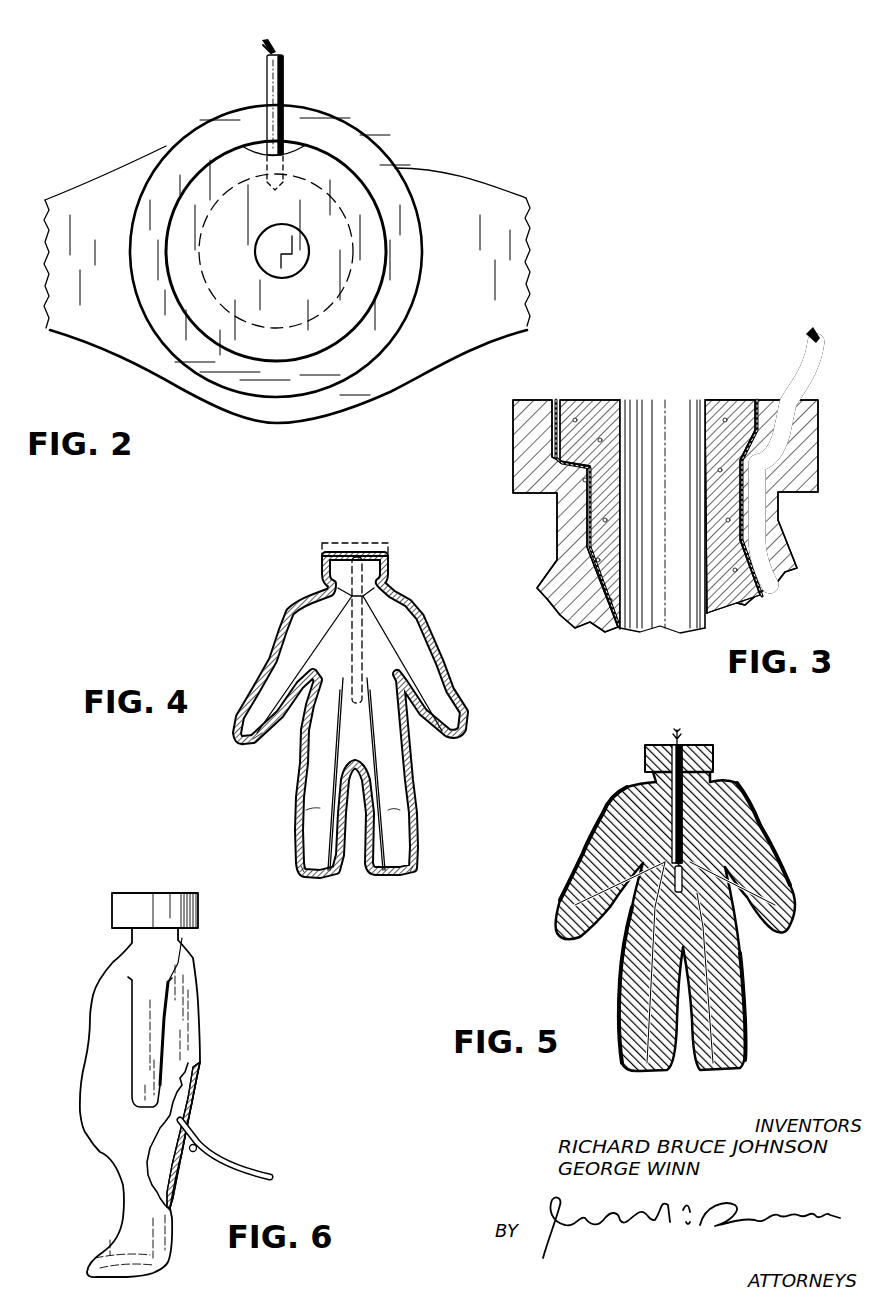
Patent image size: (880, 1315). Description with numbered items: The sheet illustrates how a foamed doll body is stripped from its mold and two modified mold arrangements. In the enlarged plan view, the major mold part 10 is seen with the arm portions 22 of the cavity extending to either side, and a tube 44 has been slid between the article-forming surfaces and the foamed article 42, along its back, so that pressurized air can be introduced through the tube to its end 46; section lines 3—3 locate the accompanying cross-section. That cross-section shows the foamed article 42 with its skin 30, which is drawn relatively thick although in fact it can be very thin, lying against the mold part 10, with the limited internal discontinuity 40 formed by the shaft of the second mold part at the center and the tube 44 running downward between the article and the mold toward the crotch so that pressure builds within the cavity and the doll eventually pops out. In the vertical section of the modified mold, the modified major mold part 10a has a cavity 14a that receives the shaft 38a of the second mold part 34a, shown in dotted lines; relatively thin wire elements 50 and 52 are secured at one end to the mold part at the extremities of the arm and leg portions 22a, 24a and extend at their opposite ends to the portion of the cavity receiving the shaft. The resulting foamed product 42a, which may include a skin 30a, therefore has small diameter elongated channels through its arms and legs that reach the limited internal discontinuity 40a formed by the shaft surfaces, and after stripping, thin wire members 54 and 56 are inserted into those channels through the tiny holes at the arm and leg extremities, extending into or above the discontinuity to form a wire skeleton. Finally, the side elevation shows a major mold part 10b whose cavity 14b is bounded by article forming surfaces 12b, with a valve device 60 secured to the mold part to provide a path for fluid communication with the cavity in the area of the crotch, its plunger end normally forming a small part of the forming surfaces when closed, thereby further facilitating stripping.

In FIG. 2, the section lines 3— 3 is at (277, 48).
In FIG. 2, the major mold part 10 is at (430, 196).
In FIG. 3, the major mold part 10 is at (778, 530).
In FIG. 2, the arm portions 22 is at (100, 200).
In FIG. 3, the skin 30 is at (588, 400).
In FIG. 2, the limited internal discontinuity 40 is at (284, 238).
In FIG. 3, the limited internal discontinuity 40 is at (627, 498).
In FIG. 3, the foamed article 42 is at (598, 400).
In FIG. 2, the tube 44 is at (288, 78).
In FIG. 3, the tube 44 is at (787, 366).
In FIG. 2, the tube tip / nozzle 46 is at (265, 42).
In FIG. 3, the tube tip / nozzle 46 is at (808, 335).
In FIG. 4, the modified major mold part 10a is at (424, 613).
In FIG. 4, the cavity 14a is at (393, 659).
In FIG. 4, the internal web lines 22a is at (284, 634).
In FIG. 4, the leg portion 24a is at (297, 843).
In FIG. 4, the second mold part 34a is at (407, 530).
In FIG. 4, the shaft 38a is at (363, 622).
In FIG. 4, the wire elements 50 is at (275, 700).
In FIG. 4, the wire elements 52 is at (320, 808).
In FIG. 5, the skin 30a is at (791, 888).
In FIG. 5, the limited internal discontinuity 40a is at (717, 830).
In FIG. 5, the foamed product 42a is at (742, 950).
In FIG. 5, the wire members 54 is at (628, 790).
In FIG. 5, the wire members 56 is at (638, 987).
In FIG. 6, the major mold part 10b is at (202, 1059).
In FIG. 6, the article forming surfaces 12b is at (193, 1115).
In FIG. 6, the cavity 14b is at (182, 1090).
In FIG. 6, the valve device 60 is at (199, 1150).